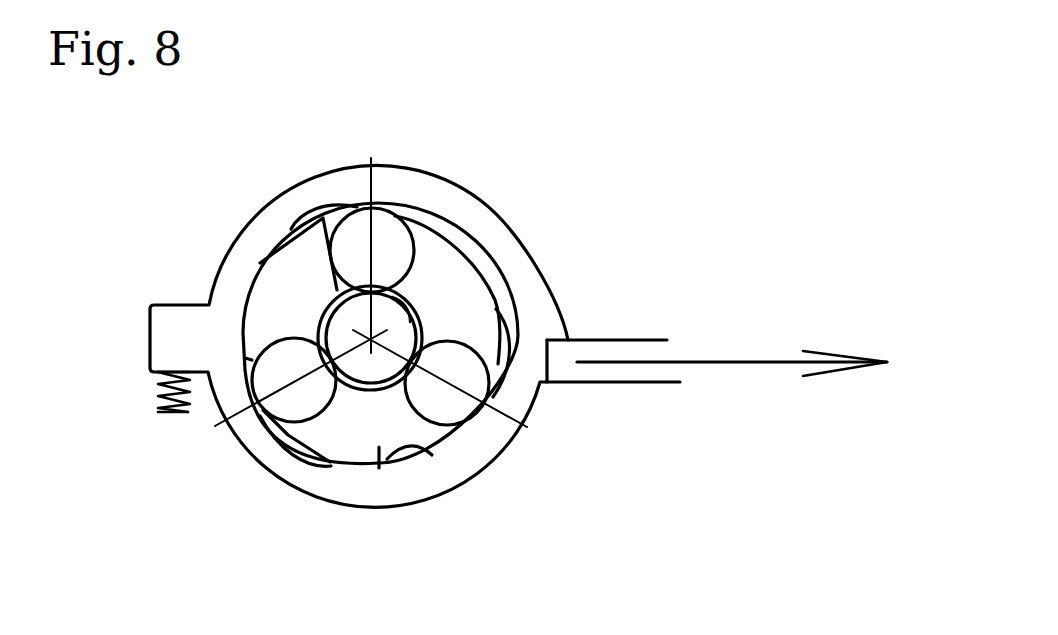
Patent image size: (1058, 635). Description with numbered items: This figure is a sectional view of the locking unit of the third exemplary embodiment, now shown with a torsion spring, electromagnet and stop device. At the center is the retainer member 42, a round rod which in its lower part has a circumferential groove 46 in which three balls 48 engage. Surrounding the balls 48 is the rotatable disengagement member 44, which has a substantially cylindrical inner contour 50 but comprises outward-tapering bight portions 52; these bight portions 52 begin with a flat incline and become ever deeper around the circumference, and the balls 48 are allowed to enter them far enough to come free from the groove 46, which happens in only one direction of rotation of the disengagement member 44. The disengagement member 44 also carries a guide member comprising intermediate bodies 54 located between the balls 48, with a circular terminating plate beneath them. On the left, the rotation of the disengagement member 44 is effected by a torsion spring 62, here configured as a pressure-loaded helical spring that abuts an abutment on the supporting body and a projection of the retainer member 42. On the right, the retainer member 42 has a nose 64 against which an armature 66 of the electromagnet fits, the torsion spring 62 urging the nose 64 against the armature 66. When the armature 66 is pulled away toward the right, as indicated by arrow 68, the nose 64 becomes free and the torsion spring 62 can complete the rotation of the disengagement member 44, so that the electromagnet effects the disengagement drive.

The retainer member 42 is at (346, 320).
The disengagement member 44 is at (458, 217).
The circumferential groove 46 is at (260, 440).
The balls 48 is at (385, 243).
The cylindrical inner contour 50 is at (430, 453).
The bight portions 52 is at (295, 448).
The intermediate bodies 54 is at (443, 297).
The torsion spring 62 is at (157, 395).
The nose 64 is at (544, 327).
The armature 66 is at (570, 373).
The arrow 68 is at (752, 362).